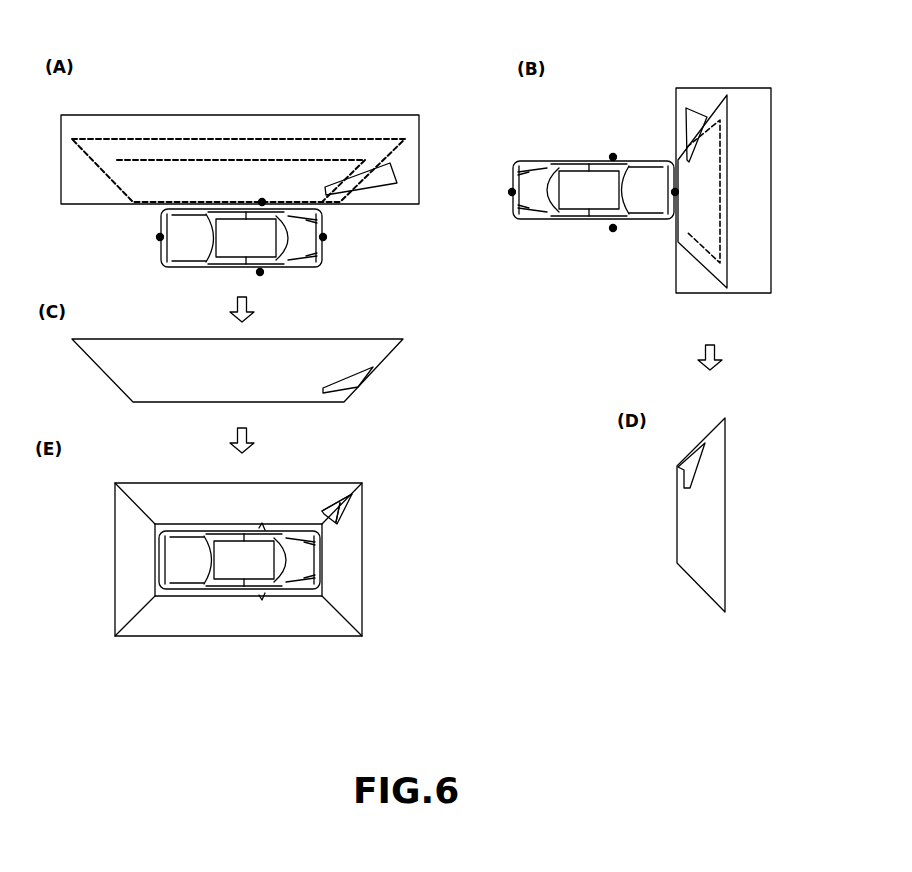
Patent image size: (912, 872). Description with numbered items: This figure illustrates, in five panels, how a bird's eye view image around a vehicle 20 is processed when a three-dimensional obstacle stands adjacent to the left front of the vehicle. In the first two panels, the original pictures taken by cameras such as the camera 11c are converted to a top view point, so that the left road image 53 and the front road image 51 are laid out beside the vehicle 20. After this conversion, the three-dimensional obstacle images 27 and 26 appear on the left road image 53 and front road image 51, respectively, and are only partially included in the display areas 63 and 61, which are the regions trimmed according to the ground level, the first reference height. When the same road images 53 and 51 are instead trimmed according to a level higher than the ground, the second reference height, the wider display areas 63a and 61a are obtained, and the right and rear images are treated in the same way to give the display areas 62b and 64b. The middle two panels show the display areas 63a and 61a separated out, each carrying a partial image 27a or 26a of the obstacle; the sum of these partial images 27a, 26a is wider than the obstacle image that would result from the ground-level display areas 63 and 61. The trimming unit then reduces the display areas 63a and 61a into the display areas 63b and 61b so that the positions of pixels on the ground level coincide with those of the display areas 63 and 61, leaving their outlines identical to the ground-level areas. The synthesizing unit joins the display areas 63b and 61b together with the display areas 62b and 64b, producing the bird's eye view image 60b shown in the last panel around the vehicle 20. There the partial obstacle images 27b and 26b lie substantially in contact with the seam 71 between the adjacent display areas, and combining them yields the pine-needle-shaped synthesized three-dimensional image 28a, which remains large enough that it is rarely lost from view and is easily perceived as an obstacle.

The camera 11c is at (262, 202).
The vehicle 20 is at (225, 230).
The three-dimensional obstacle image 26 is at (697, 113).
The partial image of three-dimensional obstacle 26a is at (686, 468).
The partial image of three-dimensional obstacle 26b is at (343, 507).
The three-dimensional obstacle image 27 is at (390, 175).
The partial image of three-dimensional obstacle 27a is at (340, 382).
The partial image of three-dimensional obstacle 27b is at (323, 515).
The synthesized three-dimensional image 28a is at (469, 461).
The front road image 51 is at (772, 113).
The left road image 53 is at (213, 115).
The bird's eye view image 60b is at (112, 563).
The display area 61 is at (722, 183).
The display area 61a is at (728, 225).
The display area 61b is at (350, 588).
The display area 62b is at (128, 589).
The display area 63 is at (250, 160).
The display area 63a is at (283, 140).
The display area 63b is at (265, 497).
The display area 64b is at (275, 620).
The seam 71 is at (352, 495).